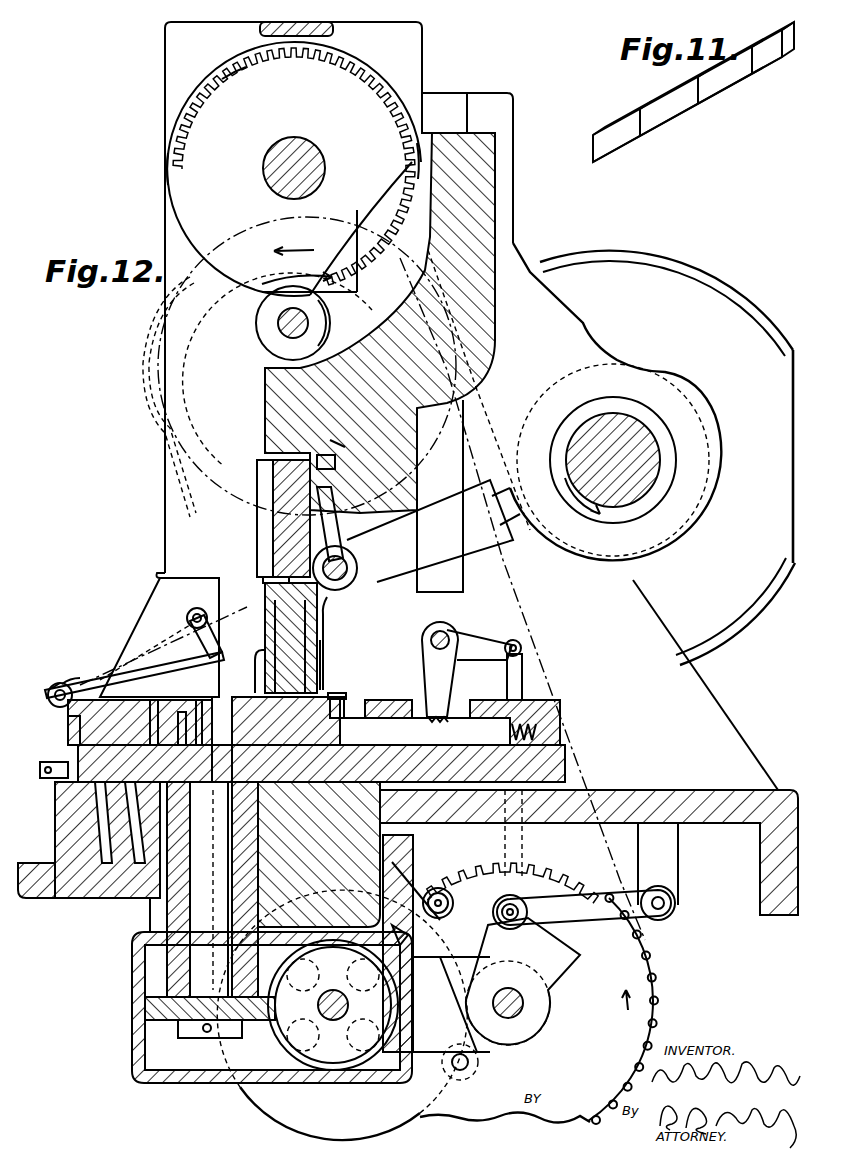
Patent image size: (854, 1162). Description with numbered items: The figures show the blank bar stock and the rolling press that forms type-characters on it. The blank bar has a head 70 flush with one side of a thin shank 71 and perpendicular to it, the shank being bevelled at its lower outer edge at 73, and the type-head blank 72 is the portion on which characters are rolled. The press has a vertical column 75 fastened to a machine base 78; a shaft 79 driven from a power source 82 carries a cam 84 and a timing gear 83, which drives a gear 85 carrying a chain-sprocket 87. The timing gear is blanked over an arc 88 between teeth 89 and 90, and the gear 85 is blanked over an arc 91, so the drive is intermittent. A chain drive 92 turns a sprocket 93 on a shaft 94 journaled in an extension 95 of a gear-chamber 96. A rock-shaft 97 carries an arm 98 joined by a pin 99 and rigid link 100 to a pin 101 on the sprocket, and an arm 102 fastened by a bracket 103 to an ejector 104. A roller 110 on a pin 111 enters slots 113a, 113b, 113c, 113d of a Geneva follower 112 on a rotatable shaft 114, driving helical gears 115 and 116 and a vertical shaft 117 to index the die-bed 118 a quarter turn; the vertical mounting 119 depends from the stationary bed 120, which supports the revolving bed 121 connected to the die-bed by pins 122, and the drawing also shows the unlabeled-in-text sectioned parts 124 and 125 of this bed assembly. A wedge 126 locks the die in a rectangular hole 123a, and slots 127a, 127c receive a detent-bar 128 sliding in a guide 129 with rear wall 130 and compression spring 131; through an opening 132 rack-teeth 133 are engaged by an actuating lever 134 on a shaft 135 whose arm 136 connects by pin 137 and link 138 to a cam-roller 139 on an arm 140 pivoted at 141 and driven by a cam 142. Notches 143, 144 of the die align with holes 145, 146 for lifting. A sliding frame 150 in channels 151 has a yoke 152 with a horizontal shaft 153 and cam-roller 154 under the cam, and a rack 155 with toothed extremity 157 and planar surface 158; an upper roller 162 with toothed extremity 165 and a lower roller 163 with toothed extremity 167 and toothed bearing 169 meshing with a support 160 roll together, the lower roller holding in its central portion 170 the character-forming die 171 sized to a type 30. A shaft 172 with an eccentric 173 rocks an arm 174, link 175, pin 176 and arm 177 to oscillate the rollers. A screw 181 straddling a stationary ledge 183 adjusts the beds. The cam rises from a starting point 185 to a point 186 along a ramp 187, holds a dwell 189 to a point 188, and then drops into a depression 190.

In FIG. 11, the head 70 is at (642, 118).
In FIG. 11, the shank 71 is at (592, 152).
In FIG. 11, the type-head blank 72 is at (650, 104).
In FIG. 11, the bevel 73 is at (594, 154).
In FIG. 12, the vertical column 75 is at (426, 44).
In FIG. 12, the machine base 78 is at (722, 792).
In FIG. 12, the shaft 79 is at (304, 144).
In FIG. 12, the power source 82 is at (745, 294).
In FIG. 12, the timing gear 83 is at (230, 78).
In FIG. 12, the cam 84 is at (391, 81).
In FIG. 12, the gear 85 is at (214, 340).
In FIG. 12, the chain-sprocket 87 is at (290, 219).
In FIG. 12, the arc 88 is at (278, 255).
In FIG. 12, the tooth 89 is at (342, 272).
In FIG. 12, the tooth 90 is at (168, 166).
In FIG. 12, the arc 91 is at (297, 273).
In FIG. 12, the chain drive 92 is at (478, 446).
In FIG. 12, the sprocket 93 is at (539, 1009).
In FIG. 12, the shaft 94 is at (523, 1000).
In FIG. 12, the extension 95 is at (488, 1054).
In FIG. 12, the gear-chamber 96 is at (180, 1084).
In FIG. 12, the rock-shaft 97 is at (70, 684).
In FIG. 12, the arm 98 is at (159, 637).
In FIG. 12, the pin 99 is at (262, 614).
In FIG. 12, the rigid link 100 is at (388, 850).
In FIG. 12, the pin 101 is at (458, 1072).
In FIG. 12, the arm 102 is at (196, 607).
In FIG. 12, the bracket 103 is at (186, 620).
In FIG. 12, the ejector 104 is at (104, 656).
In FIG. 12, the roller 110 is at (452, 896).
In FIG. 12, the pin 111 is at (446, 910).
In FIG. 12, the Geneva follower 112 is at (402, 884).
In FIG. 12, the radial slot 113a is at (380, 978).
In FIG. 12, the radial slot 113b is at (321, 974).
In FIG. 12, the radial slot 113c is at (299, 1023).
In FIG. 12, the radial slot 113d is at (348, 1037).
In FIG. 12, the rotatable shaft 114 is at (348, 1004).
In FIG. 12, the helical gear 115 is at (264, 1022).
In FIG. 12, the helical gear 116 is at (178, 1030).
In FIG. 12, the vertical shaft 117 is at (197, 889).
In FIG. 12, the die-bed 118 is at (214, 746).
In FIG. 12, the vertical mounting 119 is at (142, 936).
In FIG. 12, the stationary bed 120 is at (567, 756).
In FIG. 12, the revolving bed 121 is at (78, 736).
In FIG. 12, the pin 122 is at (48, 694).
In FIG. 12, the rectangular hole 123a is at (58, 688).
In FIG. 12, the column 124 is at (195, 878).
In FIG. 12, the block 125 is at (319, 854).
In FIG. 12, the wedge 126 is at (136, 674).
In FIG. 12, the slot 127a is at (68, 724).
In FIG. 12, the slot 127c is at (344, 702).
In FIG. 12, the detent-bar 128 is at (425, 731).
In FIG. 12, the guide 129 is at (404, 700).
In FIG. 12, the rear wall 130 is at (562, 712).
In FIG. 12, the compression spring 131 is at (510, 732).
In FIG. 12, the opening 132 is at (446, 712).
In FIG. 12, the rack-teeth 133 is at (507, 692).
In FIG. 12, the actuating lever 134 is at (440, 669).
In FIG. 12, the shaft 135 is at (448, 632).
In FIG. 12, the arm 136 is at (479, 645).
In FIG. 12, the pin 137 is at (522, 645).
In FIG. 12, the link 138 is at (523, 840).
In FIG. 12, the cam-roller 139 is at (516, 874).
In FIG. 12, the arm 140 is at (582, 909).
In FIG. 12, the pivot 141 is at (676, 903).
In FIG. 12, the cam 142 is at (570, 958).
In FIG. 12, the notch 143 is at (152, 711).
In FIG. 12, the notch 144 is at (182, 720).
In FIG. 12, the type 30 is at (198, 700).
In FIG. 12, the hole 145 is at (111, 822).
In FIG. 12, the hole 146 is at (144, 822).
In FIG. 12, the sliding frame 150 is at (504, 210).
In FIG. 12, the channel 151 is at (425, 594).
In FIG. 12, the yoke 152 is at (265, 398).
In FIG. 12, the horizontal shaft 153 is at (308, 320).
In FIG. 12, the cam-roller 154 is at (324, 336).
In FIG. 12, the rack 155 is at (265, 440).
In FIG. 12, the toothed extremity 157 is at (326, 460).
In FIG. 12, the planar central surface 158 is at (330, 440).
In FIG. 12, the support 160 is at (336, 690).
In FIG. 12, the upper roller 162 is at (292, 518).
In FIG. 12, the lower roller 163 is at (291, 633).
In FIG. 12, the toothed extremity 165 is at (263, 474).
In FIG. 12, the toothed extremity 167 is at (266, 582).
In FIG. 12, the toothed bearing 169 is at (329, 650).
In FIG. 12, the central portion 170 is at (256, 678).
In FIG. 12, the character-forming die 171 is at (289, 646).
In FIG. 12, the shaft 172 is at (620, 503).
In FIG. 12, the eccentric 173 is at (700, 490).
In FIG. 12, the arm 174 is at (672, 547).
In FIG. 12, the link 175 is at (430, 531).
In FIG. 12, the pin 176 is at (344, 586).
In FIG. 12, the arm 177 is at (334, 550).
In FIG. 12, the screw 181 is at (42, 774).
In FIG. 12, the stationary ledge 183 is at (58, 790).
In FIG. 12, the starting point 185 is at (414, 156).
In FIG. 12, the point 186 is at (333, 32).
In FIG. 12, the ramp 187 is at (402, 104).
In FIG. 12, the point 188 is at (290, 328).
In FIG. 12, the dwell 189 is at (172, 130).
In FIG. 12, the depression 190 is at (372, 210).